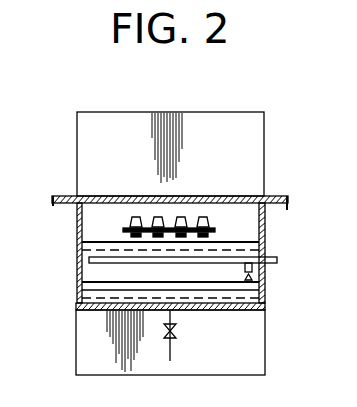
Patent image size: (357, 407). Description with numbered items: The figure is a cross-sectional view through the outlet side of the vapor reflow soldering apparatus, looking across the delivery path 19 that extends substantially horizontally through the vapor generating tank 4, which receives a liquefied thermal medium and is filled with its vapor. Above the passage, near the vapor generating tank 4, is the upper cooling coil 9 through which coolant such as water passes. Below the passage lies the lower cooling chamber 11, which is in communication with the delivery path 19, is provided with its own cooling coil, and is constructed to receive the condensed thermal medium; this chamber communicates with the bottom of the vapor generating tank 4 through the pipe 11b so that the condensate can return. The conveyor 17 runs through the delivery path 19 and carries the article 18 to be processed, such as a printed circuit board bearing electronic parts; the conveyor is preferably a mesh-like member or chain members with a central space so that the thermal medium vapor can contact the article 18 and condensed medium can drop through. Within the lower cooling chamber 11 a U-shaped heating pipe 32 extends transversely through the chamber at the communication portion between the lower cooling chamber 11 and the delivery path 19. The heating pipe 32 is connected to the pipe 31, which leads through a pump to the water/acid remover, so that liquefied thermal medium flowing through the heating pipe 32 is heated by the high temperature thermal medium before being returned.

The vapor generating tank 4 is at (264, 160).
The upper cooling coil 9 is at (197, 195).
The lower cooling chamber 11 is at (90, 268).
The pipe 11b is at (171, 357).
The conveyor 17 is at (215, 236).
The article to be processed 18 is at (117, 242).
The delivery path 19 is at (120, 240).
The pipe 31 is at (268, 263).
The U-shaped heating pipe 32 is at (263, 304).